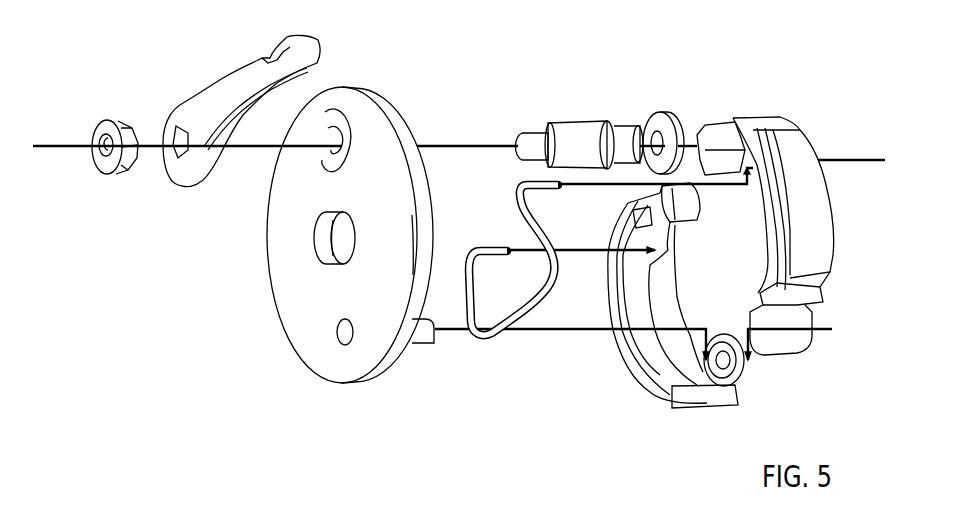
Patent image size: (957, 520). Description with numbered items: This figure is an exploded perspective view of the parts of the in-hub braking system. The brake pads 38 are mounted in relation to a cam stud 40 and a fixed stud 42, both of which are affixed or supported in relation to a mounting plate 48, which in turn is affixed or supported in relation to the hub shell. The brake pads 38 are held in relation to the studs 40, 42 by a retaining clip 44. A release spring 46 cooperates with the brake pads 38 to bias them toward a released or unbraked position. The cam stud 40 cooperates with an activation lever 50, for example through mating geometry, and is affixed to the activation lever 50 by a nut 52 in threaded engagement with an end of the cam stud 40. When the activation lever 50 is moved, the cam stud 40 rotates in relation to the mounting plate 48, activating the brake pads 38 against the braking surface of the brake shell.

The brake pads 38 is at (800, 138).
The cam stud 40 is at (590, 140).
The fixed stud 42 is at (423, 333).
The retaining clip 44 is at (662, 117).
The release spring 46 is at (497, 330).
The mounting plate 48 is at (350, 367).
The activation lever 50 is at (182, 172).
The nut 52 is at (106, 160).